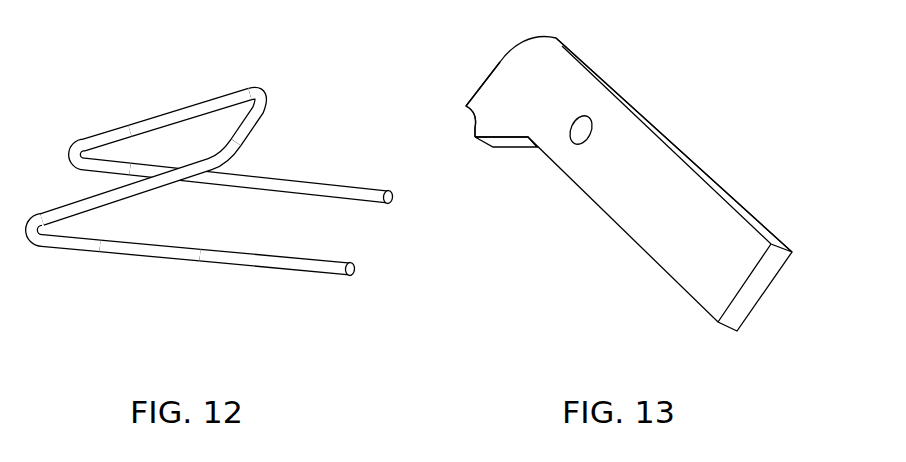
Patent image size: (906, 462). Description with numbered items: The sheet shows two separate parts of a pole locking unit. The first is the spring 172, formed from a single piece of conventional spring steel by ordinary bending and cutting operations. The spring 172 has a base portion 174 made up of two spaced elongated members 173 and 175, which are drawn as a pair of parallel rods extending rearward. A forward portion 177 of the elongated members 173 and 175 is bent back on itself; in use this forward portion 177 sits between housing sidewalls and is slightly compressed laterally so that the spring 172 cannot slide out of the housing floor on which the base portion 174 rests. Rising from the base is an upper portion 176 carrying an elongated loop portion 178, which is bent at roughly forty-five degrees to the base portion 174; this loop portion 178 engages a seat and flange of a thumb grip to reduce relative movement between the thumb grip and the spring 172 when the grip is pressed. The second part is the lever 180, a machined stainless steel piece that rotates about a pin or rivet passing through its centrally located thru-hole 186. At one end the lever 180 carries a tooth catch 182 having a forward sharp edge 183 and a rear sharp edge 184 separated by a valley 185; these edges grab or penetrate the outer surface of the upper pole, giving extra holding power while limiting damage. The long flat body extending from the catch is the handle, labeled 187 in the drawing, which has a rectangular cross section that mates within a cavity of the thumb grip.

In FIG. 12, the spring 172 is at (222, 182).
In FIG. 12, the elongated member 173 is at (227, 270).
In FIG. 12, the base portion 174 is at (185, 265).
In FIG. 12, the elongated member 175 is at (297, 177).
In FIG. 12, the upper portion 176 is at (243, 87).
In FIG. 12, the forward portion 177 is at (103, 175).
In FIG. 12, the elongated loop portion 178 is at (167, 142).
In FIG. 13, the lever 180 is at (596, 215).
In FIG. 13, the tooth catch 182 is at (470, 123).
In FIG. 13, the forward sharp edge 183 is at (466, 106).
In FIG. 13, the rear sharp edge 184 is at (475, 138).
In FIG. 13, the valley 185 is at (472, 130).
In FIG. 13, the thru-hole 186 is at (592, 115).
In FIG. 13, the top surface 187 is at (700, 205).